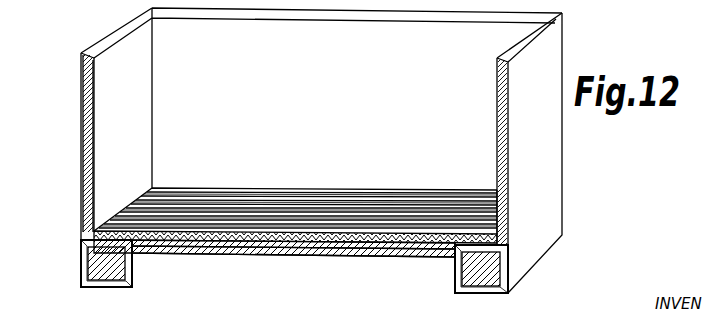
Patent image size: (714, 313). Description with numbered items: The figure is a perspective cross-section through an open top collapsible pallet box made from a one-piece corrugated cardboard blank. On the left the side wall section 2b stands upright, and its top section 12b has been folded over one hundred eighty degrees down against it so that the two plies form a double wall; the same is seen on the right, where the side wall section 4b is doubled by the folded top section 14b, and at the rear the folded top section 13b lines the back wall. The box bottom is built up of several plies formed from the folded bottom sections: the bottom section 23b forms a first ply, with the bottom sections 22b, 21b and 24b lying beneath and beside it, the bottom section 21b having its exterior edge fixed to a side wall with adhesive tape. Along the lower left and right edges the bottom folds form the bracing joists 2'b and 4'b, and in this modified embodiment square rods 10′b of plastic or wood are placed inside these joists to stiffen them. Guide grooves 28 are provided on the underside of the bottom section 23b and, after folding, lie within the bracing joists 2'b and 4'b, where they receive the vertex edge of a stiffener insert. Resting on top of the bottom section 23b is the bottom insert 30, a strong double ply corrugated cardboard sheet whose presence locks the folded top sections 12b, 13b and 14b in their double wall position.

The side wall section 2b is at (82, 120).
The top section 12b is at (95, 124).
The top section 13b is at (355, 108).
The top section 14b is at (498, 126).
The side wall section 4b is at (510, 118).
The bottom insert 30 is at (248, 233).
The bottom section 23b is at (311, 236).
The guide grooves 28 is at (82, 253).
The square rods 10′b is at (105, 268).
The bracing joist 2'b is at (293, 270).
The bottom section 22b is at (219, 248).
The bottom section 21b is at (281, 250).
The bottom section 24b is at (345, 252).
The bracing joist 4'b is at (440, 267).